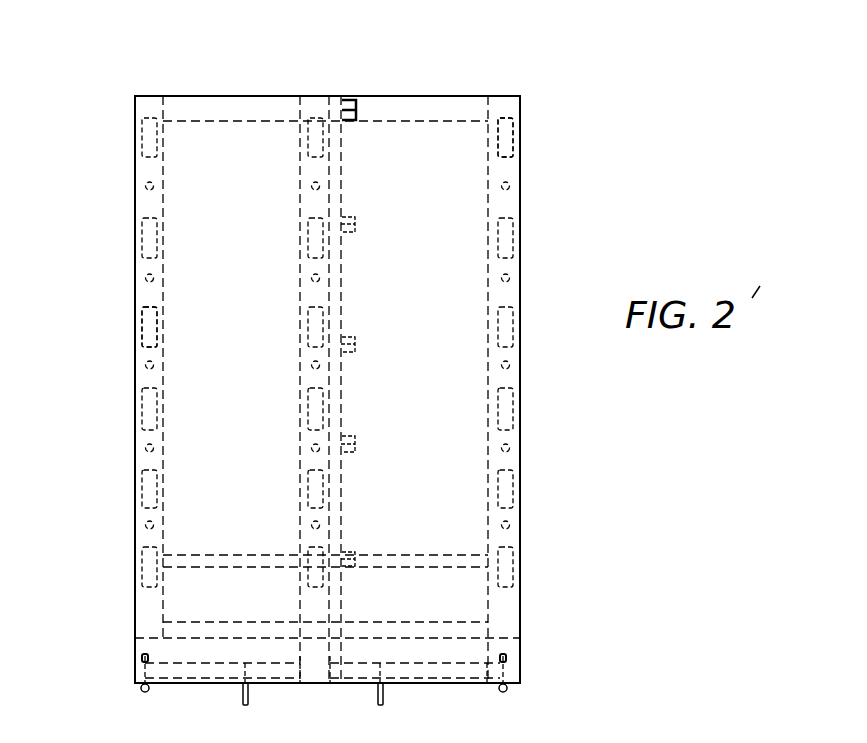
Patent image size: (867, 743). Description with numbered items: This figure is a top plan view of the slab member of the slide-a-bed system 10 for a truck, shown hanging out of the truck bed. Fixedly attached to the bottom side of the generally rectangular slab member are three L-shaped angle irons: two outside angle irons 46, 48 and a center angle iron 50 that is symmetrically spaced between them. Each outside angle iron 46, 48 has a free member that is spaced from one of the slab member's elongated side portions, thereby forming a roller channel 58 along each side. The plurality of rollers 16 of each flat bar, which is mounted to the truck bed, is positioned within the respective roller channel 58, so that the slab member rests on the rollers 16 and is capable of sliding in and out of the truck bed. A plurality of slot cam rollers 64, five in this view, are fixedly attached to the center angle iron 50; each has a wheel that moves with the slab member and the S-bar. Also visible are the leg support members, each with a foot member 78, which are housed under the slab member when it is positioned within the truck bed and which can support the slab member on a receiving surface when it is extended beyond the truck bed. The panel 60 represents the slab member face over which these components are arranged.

The wall panel assembly 10 is at (518, 306).
The rollers 16 is at (512, 138).
The outside angle iron 46 is at (172, 300).
The outside angle iron 48 is at (487, 623).
The center angle iron 50 is at (302, 162).
The roller channel 58 is at (509, 107).
The sheathing panel 60 is at (188, 96).
The slot cam rollers 64 is at (347, 107).
The foot member 78 is at (324, 698).